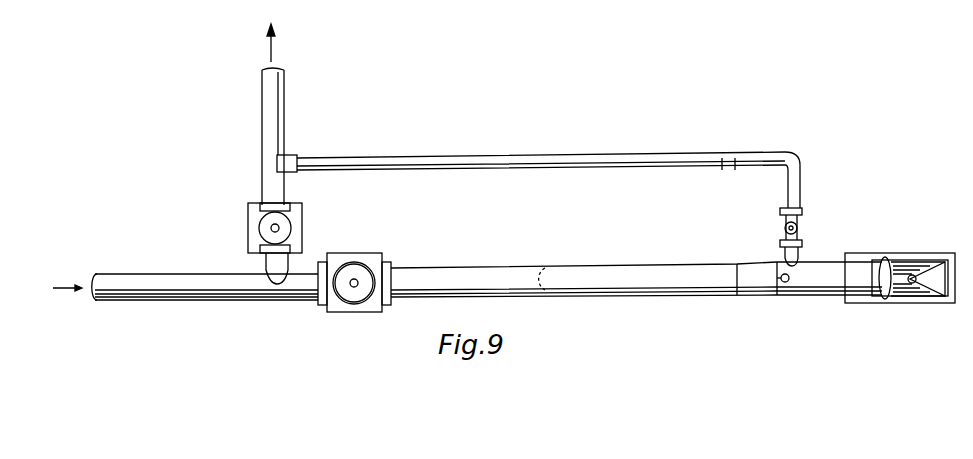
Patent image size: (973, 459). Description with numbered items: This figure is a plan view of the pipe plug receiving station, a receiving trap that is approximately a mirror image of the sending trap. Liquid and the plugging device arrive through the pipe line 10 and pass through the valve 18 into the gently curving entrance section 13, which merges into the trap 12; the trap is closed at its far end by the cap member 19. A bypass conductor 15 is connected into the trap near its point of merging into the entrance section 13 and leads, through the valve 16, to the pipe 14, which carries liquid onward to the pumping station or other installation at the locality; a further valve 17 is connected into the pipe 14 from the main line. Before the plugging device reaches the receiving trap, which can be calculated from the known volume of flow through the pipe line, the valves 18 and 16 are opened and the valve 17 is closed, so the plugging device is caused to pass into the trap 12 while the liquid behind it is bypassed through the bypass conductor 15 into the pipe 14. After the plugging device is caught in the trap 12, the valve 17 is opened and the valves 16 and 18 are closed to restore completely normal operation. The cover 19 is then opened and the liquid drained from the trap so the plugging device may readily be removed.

The supply pipe 10 is at (202, 282).
The trap 12 is at (815, 265).
The entrance section 13 is at (596, 275).
The pipe 14 is at (285, 93).
The bypass conductor 15 is at (483, 160).
The valve 16 is at (780, 218).
The valve 17 is at (291, 228).
The valve 18 is at (360, 256).
The cap member 19 is at (885, 257).